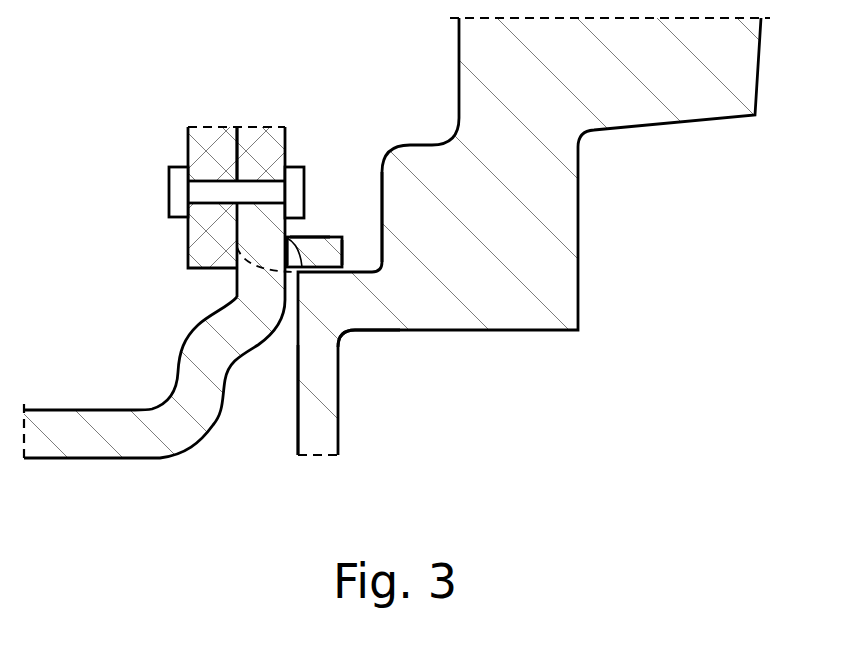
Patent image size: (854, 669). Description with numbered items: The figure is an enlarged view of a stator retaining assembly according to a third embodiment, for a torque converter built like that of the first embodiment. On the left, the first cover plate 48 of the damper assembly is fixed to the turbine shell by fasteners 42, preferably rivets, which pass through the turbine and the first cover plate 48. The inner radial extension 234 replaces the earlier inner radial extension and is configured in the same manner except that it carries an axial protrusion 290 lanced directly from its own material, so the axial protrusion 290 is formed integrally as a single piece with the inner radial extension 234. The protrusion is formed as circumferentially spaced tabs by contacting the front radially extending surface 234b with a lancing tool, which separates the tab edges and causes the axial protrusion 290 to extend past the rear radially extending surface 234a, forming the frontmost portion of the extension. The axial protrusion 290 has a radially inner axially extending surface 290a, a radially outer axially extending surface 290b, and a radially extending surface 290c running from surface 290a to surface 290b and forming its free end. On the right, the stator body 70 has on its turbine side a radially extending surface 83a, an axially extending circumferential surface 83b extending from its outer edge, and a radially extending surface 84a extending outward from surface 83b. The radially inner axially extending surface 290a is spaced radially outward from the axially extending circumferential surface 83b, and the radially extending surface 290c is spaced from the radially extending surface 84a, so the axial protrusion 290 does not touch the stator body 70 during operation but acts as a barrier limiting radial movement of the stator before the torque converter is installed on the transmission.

The fastener 42 is at (215, 188).
The first cover plate 48 is at (198, 240).
The stator body 70 is at (506, 216).
The radially extending surface 83a is at (300, 402).
The axially extending circumferential surface 83b is at (343, 274).
The radially extending surface 84a is at (385, 200).
The inner radial extension 234 is at (270, 128).
The rear radially extending surface 234a is at (287, 138).
The front radially extending surface 234b is at (240, 165).
The axial protrusion 290 is at (342, 222).
The radially inner axially extending surface 290a is at (288, 245).
The radially outer axially extending surface 290b is at (297, 237).
The radially extending surface 290c is at (343, 262).